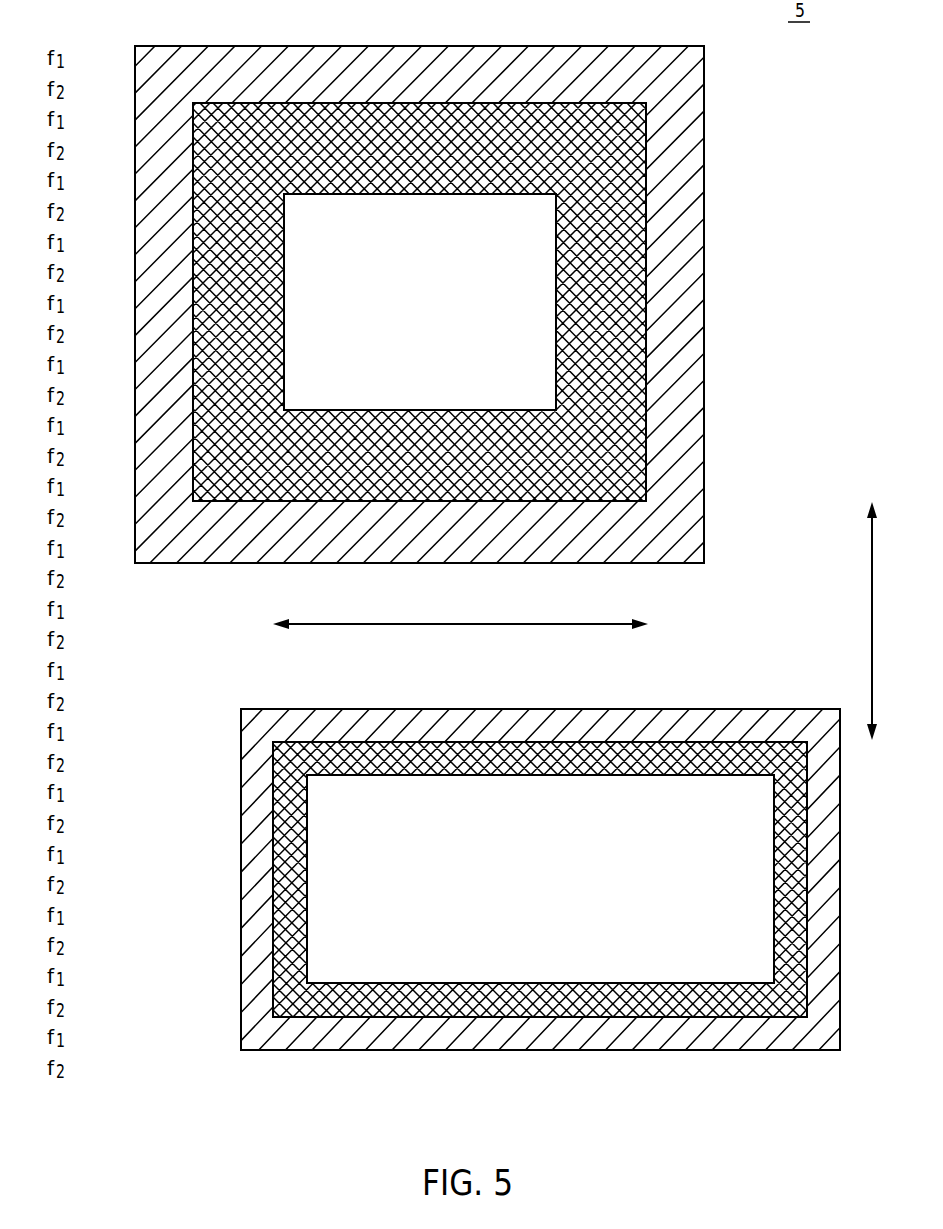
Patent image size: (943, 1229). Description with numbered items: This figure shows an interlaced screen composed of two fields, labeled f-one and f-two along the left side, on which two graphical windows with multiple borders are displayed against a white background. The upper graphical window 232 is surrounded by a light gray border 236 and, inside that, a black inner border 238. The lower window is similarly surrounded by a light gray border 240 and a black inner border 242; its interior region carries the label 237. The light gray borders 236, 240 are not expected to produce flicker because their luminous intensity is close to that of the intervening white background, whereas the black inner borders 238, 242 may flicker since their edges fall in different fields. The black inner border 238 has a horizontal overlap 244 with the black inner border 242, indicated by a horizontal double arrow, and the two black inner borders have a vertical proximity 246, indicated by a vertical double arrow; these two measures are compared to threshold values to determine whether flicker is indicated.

The graphical window 232 is at (512, 260).
The light gray border 236 is at (300, 45).
The second cavity 237 is at (697, 842).
The black inner border 238 is at (385, 410).
The light gray border 240 is at (548, 1050).
The black inner border 242 is at (396, 776).
The horizontal overlap 244 is at (437, 625).
The vertical proximity 246 is at (872, 599).